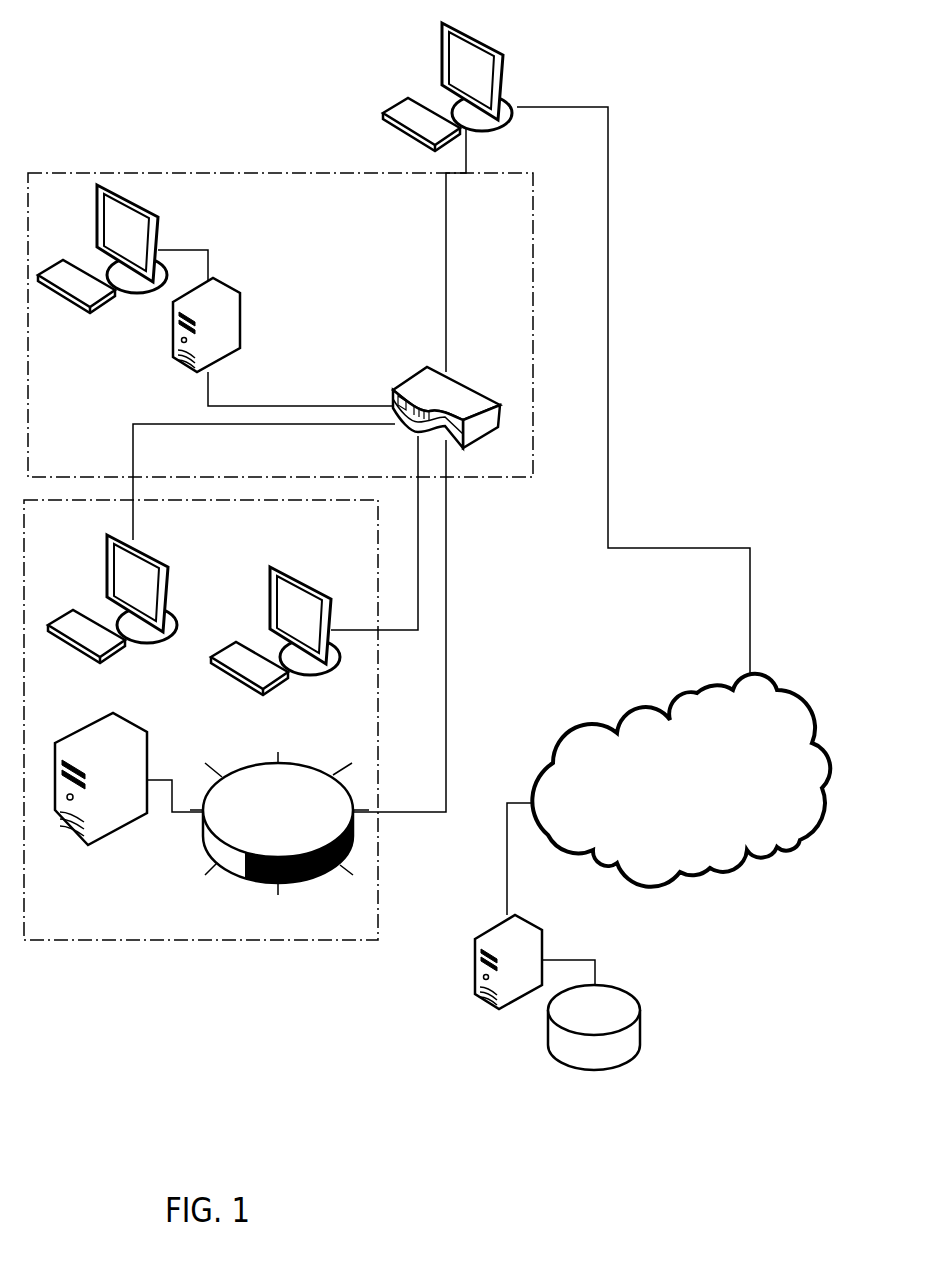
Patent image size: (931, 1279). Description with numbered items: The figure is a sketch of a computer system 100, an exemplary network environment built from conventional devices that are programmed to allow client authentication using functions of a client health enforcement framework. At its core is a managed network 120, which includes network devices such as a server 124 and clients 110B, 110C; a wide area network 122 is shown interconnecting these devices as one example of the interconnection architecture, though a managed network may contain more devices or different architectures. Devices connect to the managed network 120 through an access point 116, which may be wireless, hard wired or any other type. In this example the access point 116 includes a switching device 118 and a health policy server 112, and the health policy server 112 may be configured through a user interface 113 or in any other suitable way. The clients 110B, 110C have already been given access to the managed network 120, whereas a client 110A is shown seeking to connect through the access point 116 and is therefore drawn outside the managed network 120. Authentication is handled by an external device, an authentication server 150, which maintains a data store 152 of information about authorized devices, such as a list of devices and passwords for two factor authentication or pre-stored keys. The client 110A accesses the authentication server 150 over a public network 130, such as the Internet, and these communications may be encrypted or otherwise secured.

The computer system 100 is at (634, 132).
The client 110A is at (432, 21).
The client 110B is at (140, 550).
The client 110C is at (326, 587).
The health policy server 112 is at (243, 302).
The user interface 113 is at (162, 232).
The access point 116 is at (533, 412).
The switching device 118 is at (453, 387).
The managed network 120 is at (236, 940).
The wide area network 122 is at (290, 780).
The server 124 is at (112, 722).
The public network 130 is at (683, 876).
The authentication server 150 is at (475, 935).
The data store 152 is at (638, 1022).